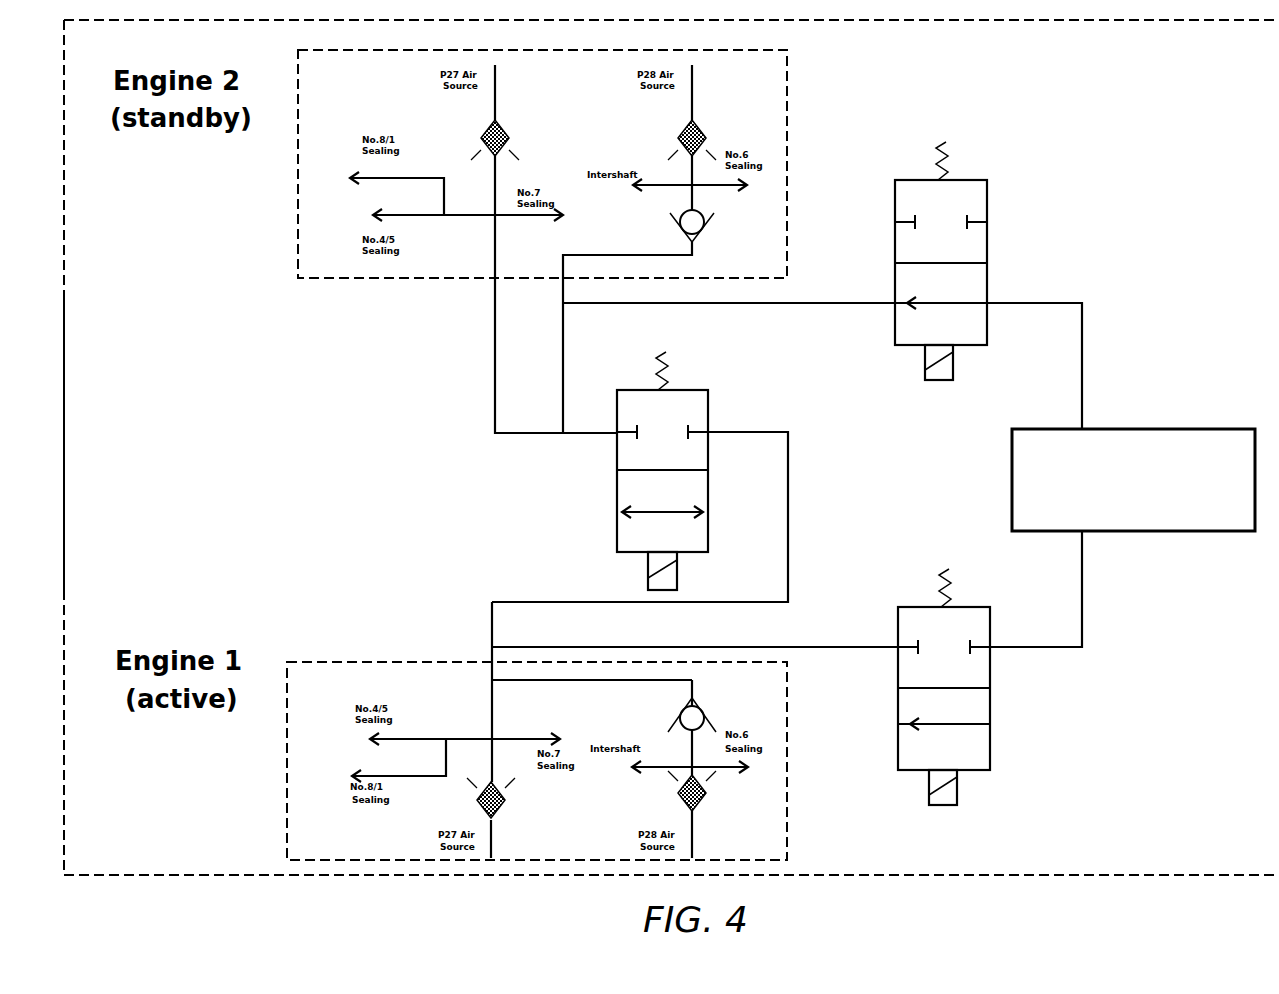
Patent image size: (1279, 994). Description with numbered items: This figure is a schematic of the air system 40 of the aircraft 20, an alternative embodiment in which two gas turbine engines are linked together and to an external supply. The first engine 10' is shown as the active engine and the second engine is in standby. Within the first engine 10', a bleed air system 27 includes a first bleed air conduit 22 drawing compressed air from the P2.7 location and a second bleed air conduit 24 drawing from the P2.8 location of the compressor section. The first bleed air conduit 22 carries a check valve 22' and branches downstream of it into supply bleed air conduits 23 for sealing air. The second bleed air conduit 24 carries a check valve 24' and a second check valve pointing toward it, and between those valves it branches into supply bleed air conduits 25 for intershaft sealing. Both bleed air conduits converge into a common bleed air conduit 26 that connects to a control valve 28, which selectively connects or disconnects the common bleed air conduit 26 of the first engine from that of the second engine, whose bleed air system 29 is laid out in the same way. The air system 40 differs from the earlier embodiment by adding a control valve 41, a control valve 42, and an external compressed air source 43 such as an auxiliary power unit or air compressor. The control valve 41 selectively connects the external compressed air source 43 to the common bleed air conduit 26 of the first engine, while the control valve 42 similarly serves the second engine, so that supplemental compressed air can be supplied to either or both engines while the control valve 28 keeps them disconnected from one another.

The first engine 10' is at (537, 761).
The aircraft 20 is at (1278, 52).
The first bleed air conduit 22 is at (532, 461).
The check valve 22' is at (523, 469).
The supply bleed air conduits 23 is at (492, 215).
The second bleed air conduit 24 is at (729, 461).
The check valve 24' is at (720, 465).
The supply bleed air conduits 25 is at (688, 185).
The common bleed air conduit 26 is at (588, 433).
The bleed air system 27 is at (416, 588).
The control valve 28 is at (708, 392).
The bleed air system 29 is at (426, 468).
The air system 40 is at (188, 212).
The control valve 41 is at (990, 625).
The control valve 42 is at (987, 208).
The external compressed air source 43 is at (1125, 429).